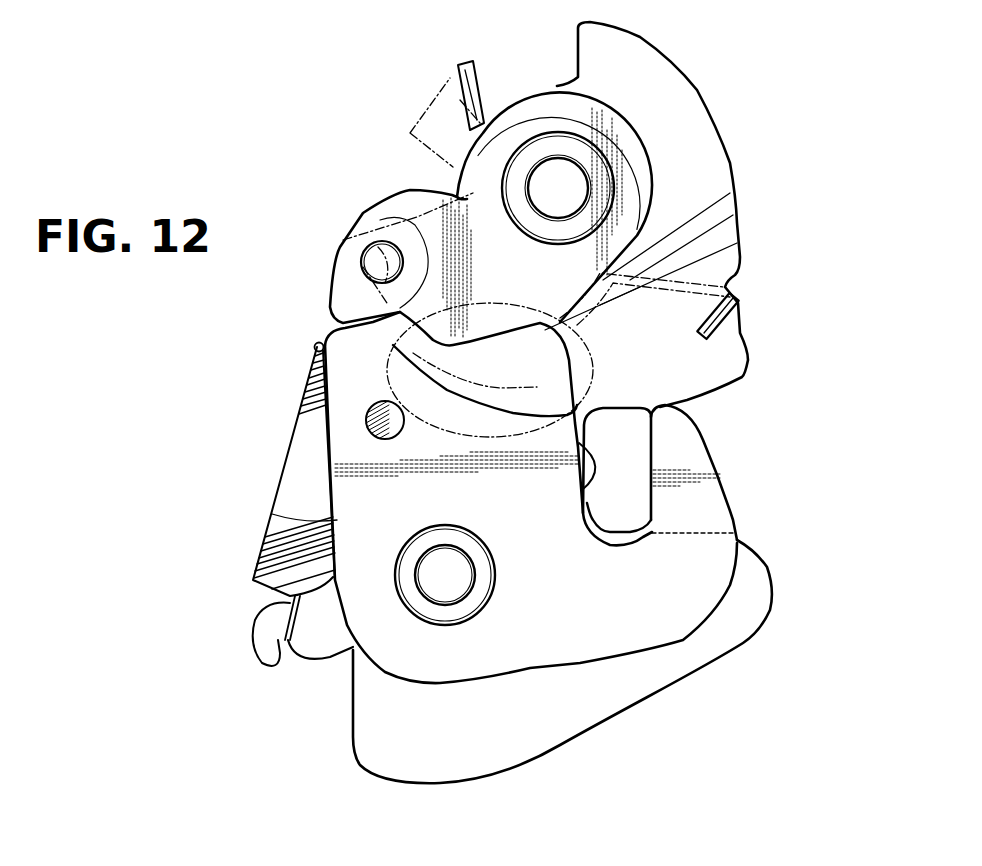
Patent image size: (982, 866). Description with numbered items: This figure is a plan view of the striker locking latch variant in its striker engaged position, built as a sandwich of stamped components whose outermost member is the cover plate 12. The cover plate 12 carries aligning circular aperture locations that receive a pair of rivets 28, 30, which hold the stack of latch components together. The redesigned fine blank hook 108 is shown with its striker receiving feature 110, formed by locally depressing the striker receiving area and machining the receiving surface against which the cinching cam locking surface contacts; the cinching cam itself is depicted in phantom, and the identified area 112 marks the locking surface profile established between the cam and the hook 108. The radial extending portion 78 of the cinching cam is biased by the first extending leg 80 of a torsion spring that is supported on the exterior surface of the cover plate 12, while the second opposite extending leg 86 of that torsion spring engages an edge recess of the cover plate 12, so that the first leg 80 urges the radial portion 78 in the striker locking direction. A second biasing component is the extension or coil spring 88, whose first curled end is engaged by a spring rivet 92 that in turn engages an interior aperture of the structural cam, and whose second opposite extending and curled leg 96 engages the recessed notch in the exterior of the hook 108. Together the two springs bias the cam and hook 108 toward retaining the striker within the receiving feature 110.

The cover plate 12 is at (704, 188).
The rivet 28 is at (487, 575).
The rivet 30 is at (553, 207).
The radial extending portion of the cinching cam 78 is at (425, 115).
The first extending leg of the torsion spring 80 is at (477, 80).
The second extending leg of the torsion spring 86 is at (717, 327).
The coil spring 88 is at (292, 433).
The spring rivet 92 is at (372, 257).
The second extending curled leg of the coil spring 96 is at (280, 628).
The hook 108 is at (340, 510).
The striker receiving feature 110 is at (586, 486).
The locking surface profile 112 is at (314, 344).